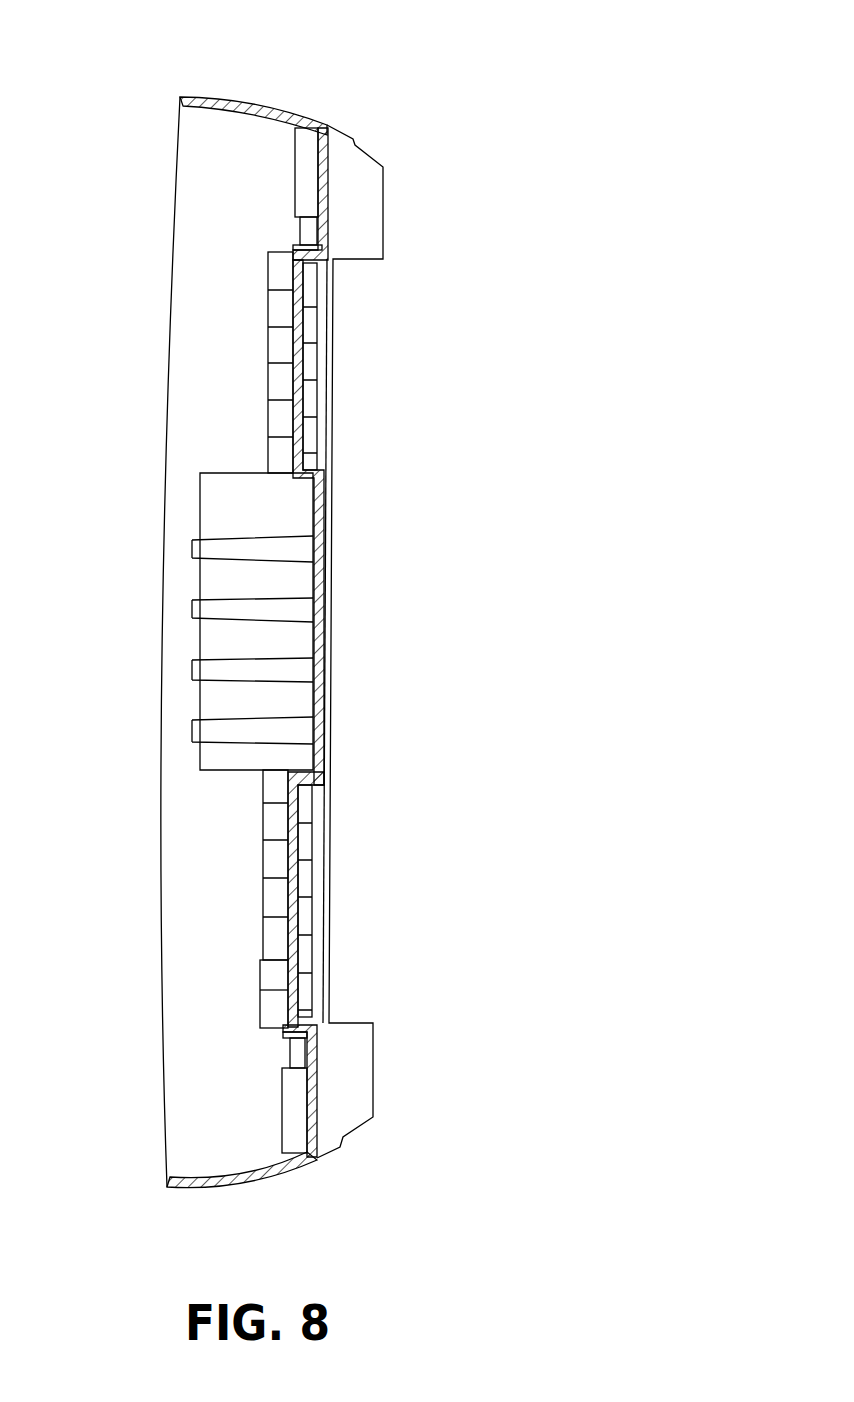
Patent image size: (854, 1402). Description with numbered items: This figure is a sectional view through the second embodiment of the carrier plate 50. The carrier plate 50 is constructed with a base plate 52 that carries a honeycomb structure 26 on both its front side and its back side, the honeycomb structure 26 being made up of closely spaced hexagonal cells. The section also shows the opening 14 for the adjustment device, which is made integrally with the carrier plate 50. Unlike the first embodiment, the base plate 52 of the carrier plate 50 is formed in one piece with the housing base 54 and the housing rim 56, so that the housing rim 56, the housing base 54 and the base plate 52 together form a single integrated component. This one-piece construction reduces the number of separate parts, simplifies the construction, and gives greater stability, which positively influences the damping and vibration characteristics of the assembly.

The opening 14 is at (280, 705).
The honeycomb structure 26 is at (272, 857).
The carrier plate 50 is at (260, 997).
The base plate 52 is at (290, 972).
The housing base 54 is at (327, 208).
The housing rim 56 is at (288, 114).